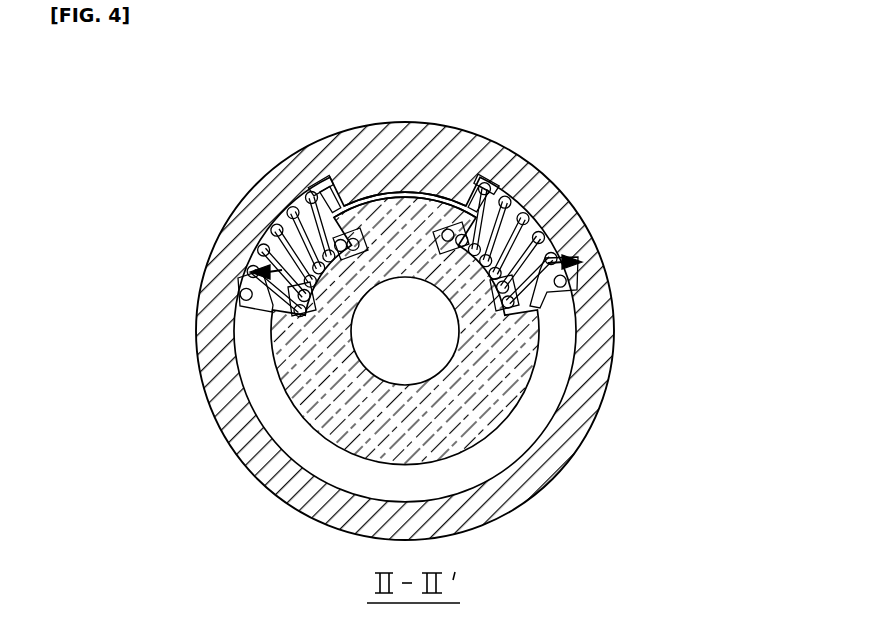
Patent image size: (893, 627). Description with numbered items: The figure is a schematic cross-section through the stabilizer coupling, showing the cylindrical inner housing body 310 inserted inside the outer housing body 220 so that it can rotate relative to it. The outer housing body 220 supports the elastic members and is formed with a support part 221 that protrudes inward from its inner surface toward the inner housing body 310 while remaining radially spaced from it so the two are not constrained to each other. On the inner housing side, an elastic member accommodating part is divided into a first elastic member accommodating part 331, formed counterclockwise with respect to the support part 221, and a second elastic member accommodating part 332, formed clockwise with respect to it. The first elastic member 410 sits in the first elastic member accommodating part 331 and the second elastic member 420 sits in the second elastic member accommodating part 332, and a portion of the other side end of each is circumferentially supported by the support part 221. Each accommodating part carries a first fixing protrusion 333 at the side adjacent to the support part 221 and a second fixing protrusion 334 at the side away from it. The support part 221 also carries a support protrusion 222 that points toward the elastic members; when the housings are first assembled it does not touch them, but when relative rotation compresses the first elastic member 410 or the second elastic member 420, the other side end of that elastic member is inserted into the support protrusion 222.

The outer housing body 220 is at (533, 169).
The support part 221 is at (366, 194).
The support protrusion 222 is at (324, 188).
The inner housing body 310 is at (494, 391).
The first elastic member accommodating part 331 is at (292, 272).
The second elastic member accommodating part 332 is at (465, 220).
The first fixing protrusion 333 is at (240, 300).
The second fixing protrusion 334 is at (280, 212).
The first elastic member 410 is at (267, 292).
The second elastic member 420 is at (582, 262).